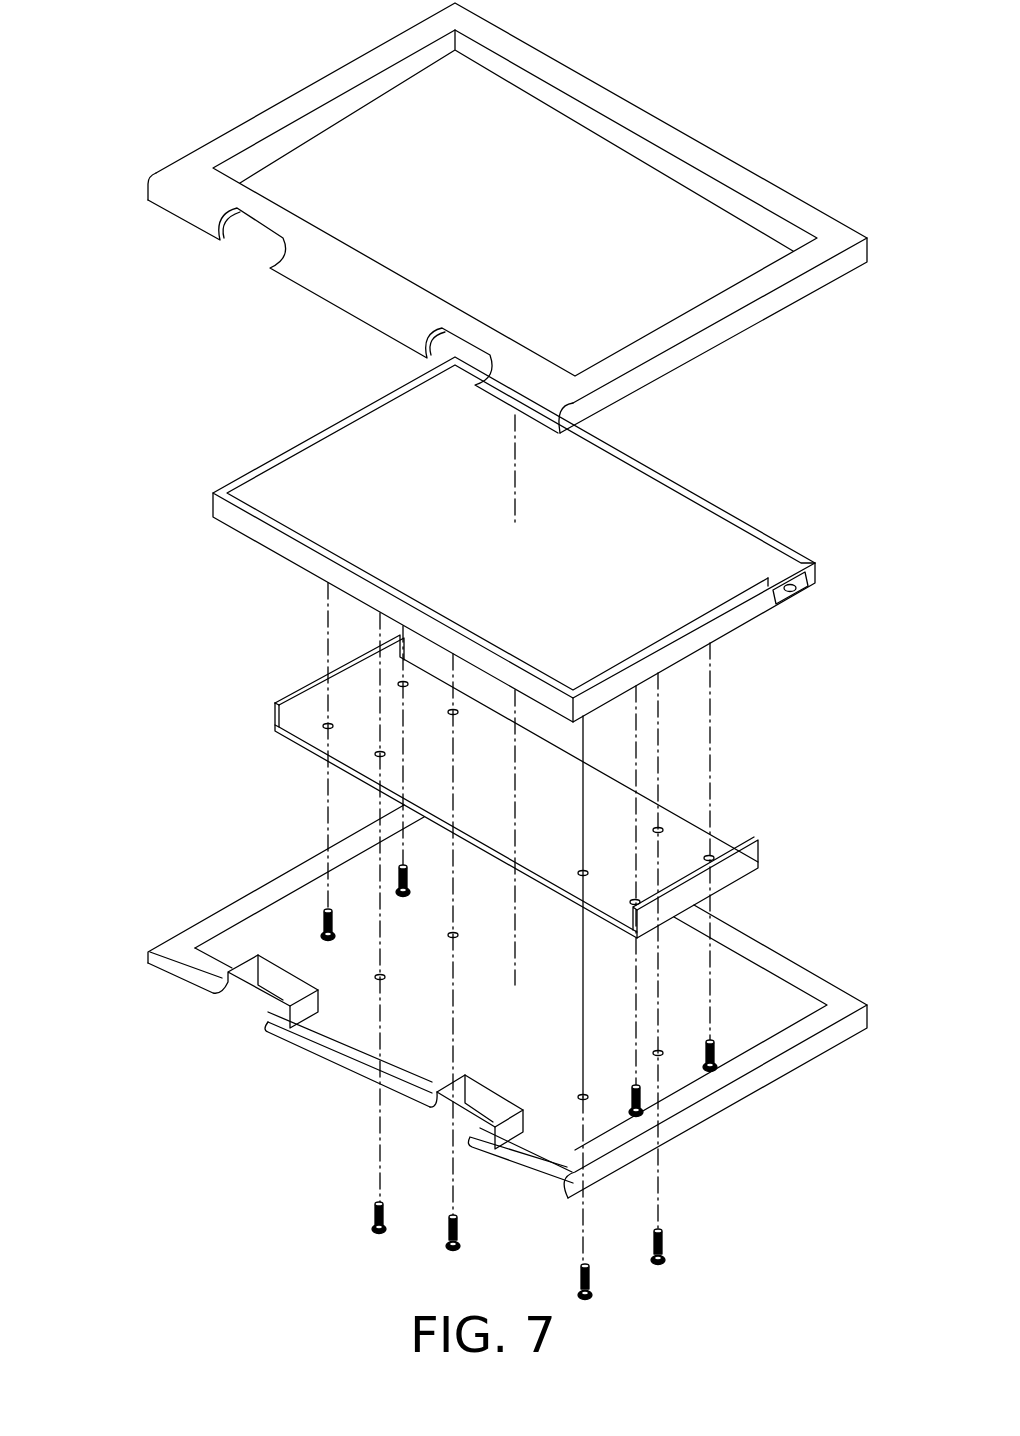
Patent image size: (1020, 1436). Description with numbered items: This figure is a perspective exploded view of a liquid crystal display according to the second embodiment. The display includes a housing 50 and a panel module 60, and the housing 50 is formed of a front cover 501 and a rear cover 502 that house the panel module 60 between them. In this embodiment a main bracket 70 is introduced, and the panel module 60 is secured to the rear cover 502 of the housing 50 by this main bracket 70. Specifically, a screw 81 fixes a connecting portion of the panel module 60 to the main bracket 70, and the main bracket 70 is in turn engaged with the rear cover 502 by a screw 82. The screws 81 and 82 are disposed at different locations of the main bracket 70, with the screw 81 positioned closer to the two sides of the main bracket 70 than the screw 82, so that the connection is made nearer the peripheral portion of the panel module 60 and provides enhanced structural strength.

The housing 50 is at (86, 392).
The front cover 501 is at (166, 212).
The rear cover 502 is at (155, 945).
The panel module 60 is at (704, 555).
The main bracket 70 is at (752, 860).
The screw 81 is at (326, 922).
The screw 82 is at (374, 1210).